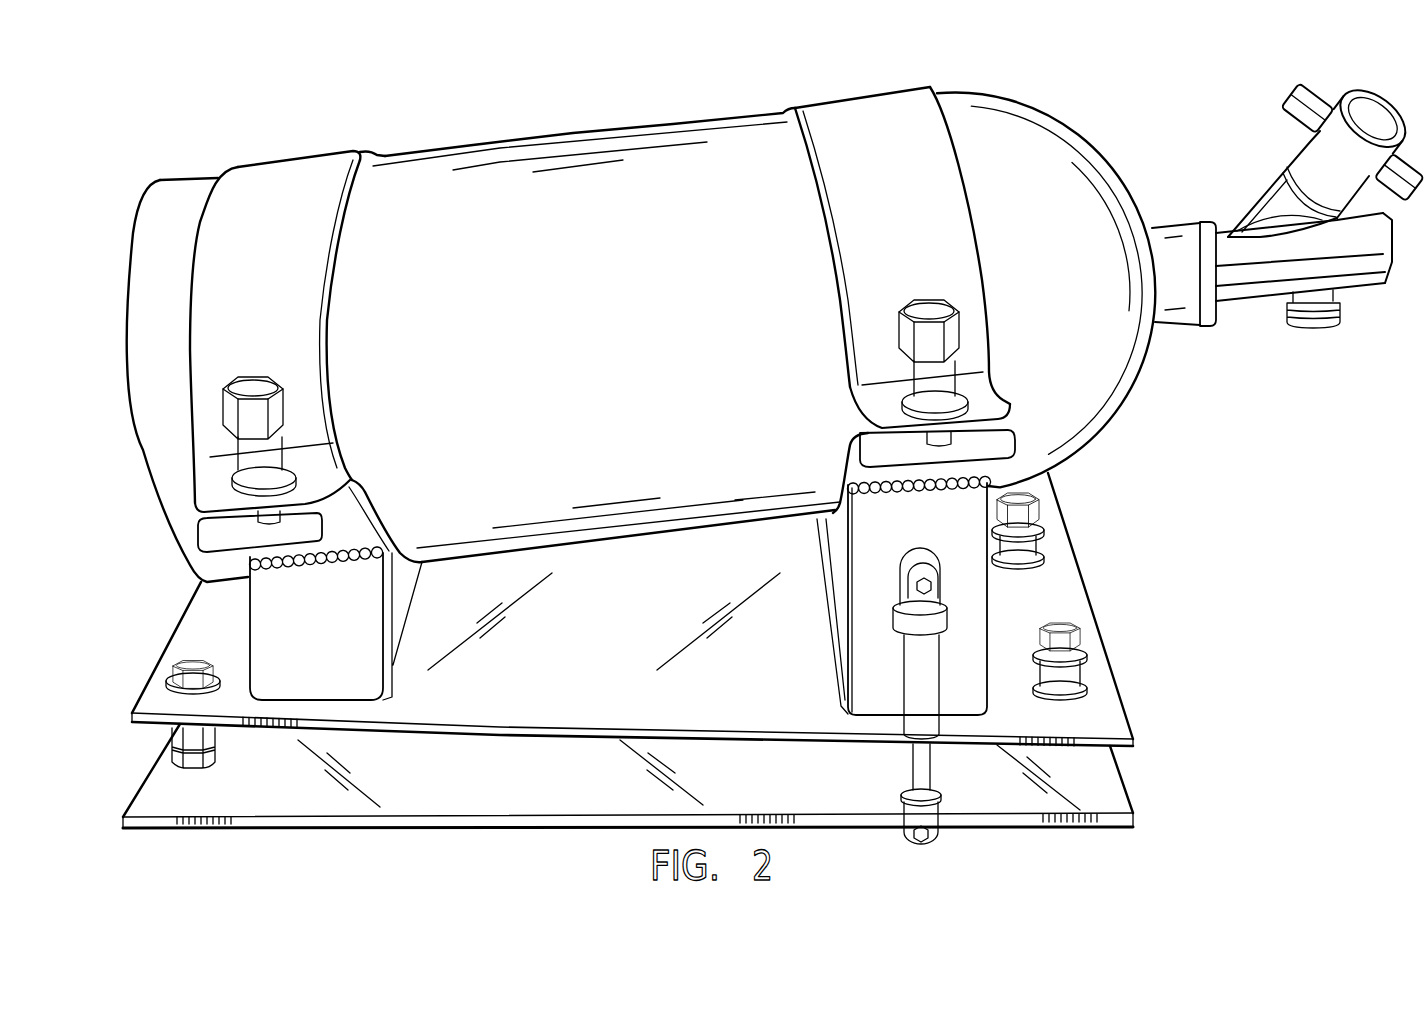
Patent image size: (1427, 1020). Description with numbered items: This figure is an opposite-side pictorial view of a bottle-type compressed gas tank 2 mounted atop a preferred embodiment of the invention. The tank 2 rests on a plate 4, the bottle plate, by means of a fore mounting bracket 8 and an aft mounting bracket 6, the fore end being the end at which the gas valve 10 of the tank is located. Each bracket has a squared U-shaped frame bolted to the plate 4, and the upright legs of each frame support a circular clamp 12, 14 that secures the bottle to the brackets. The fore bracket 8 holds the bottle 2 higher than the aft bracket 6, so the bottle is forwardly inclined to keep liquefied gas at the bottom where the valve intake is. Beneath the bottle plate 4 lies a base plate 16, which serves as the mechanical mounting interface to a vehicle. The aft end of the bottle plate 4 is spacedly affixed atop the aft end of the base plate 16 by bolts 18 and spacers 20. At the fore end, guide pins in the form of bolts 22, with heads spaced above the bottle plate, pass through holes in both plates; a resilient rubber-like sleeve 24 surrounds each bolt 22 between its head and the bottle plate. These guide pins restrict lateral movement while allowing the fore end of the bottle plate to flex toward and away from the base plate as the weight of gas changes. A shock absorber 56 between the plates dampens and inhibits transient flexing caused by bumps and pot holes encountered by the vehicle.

The compressed gas tank 2 is at (596, 352).
The plate 4 is at (1073, 547).
The aft mounting bracket 6 is at (320, 636).
The fore mounting bracket 8 is at (928, 532).
The gas valve 10 is at (1268, 192).
The circular clamp 12 is at (276, 311).
The circular clamp 14 is at (915, 219).
The base plate 16 is at (1135, 813).
The bolt 18 is at (192, 668).
The spacer 20 is at (205, 766).
The bolt 22 is at (1057, 632).
The resilient sleeve 24 is at (1067, 676).
The shock absorber 56 is at (905, 650).